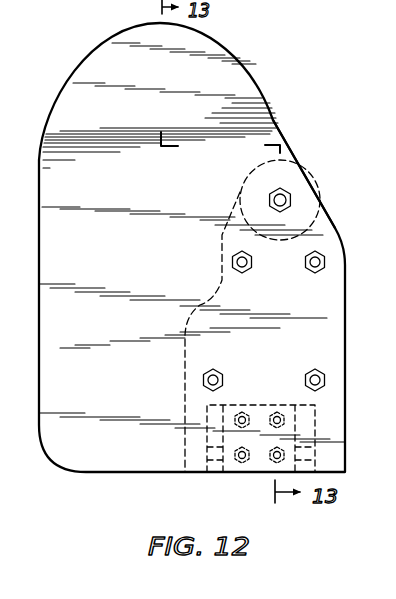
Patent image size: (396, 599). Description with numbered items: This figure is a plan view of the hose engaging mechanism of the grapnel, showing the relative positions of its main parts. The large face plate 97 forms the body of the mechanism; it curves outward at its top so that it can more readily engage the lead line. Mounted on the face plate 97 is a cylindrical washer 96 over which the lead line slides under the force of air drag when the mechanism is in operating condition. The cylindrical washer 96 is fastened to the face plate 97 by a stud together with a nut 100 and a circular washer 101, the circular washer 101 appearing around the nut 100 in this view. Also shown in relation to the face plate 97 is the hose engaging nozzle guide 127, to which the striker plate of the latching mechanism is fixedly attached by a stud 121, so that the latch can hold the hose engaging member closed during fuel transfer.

The cylindrical washer 96 is at (321, 172).
The face plate 97 is at (163, 197).
The nut 100 is at (287, 200).
The circular washer 101 is at (316, 187).
The stud 121 is at (290, 272).
The hose engaging nozzle guide 127 is at (185, 403).